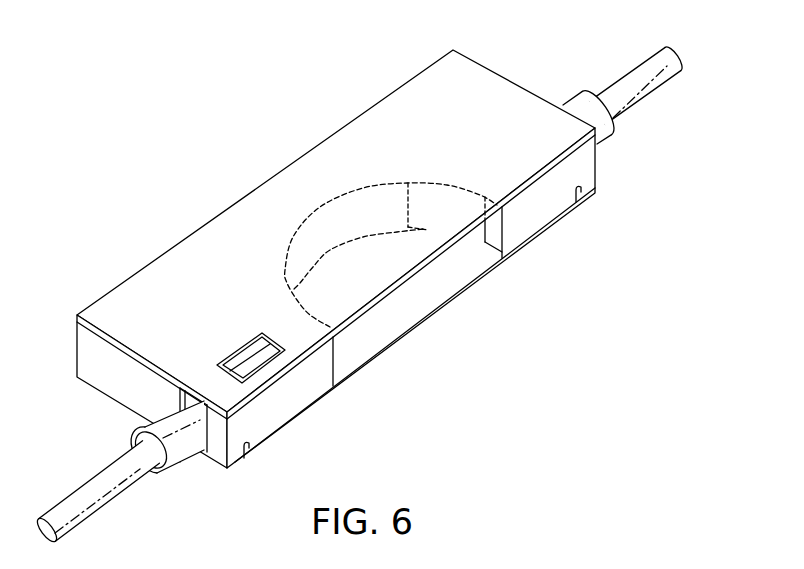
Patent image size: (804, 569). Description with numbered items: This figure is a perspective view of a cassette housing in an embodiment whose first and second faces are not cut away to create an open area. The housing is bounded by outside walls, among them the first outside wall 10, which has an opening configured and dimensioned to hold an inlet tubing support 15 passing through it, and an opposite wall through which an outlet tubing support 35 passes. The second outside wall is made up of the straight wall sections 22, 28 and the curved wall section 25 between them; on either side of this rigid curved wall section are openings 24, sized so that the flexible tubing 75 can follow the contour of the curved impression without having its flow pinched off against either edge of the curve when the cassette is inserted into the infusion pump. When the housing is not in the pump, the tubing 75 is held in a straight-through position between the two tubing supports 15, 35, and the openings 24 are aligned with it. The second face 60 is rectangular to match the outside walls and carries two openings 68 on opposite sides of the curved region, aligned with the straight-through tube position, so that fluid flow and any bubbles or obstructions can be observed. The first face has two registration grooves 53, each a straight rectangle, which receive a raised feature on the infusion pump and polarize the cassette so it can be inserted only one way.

The first outside wall 10 is at (126, 383).
The inlet tubing support 15 is at (182, 462).
The straight wall section 22 is at (555, 215).
The openings 24 is at (421, 187).
The curved wall section 25 is at (320, 214).
The straight wall section 28 is at (306, 401).
The outlet tubing support 35 is at (606, 140).
The registration grooves 53 is at (248, 458).
The second face 60 is at (461, 131).
The openings 68 is at (240, 348).
The flexible tubing 75 is at (405, 256).